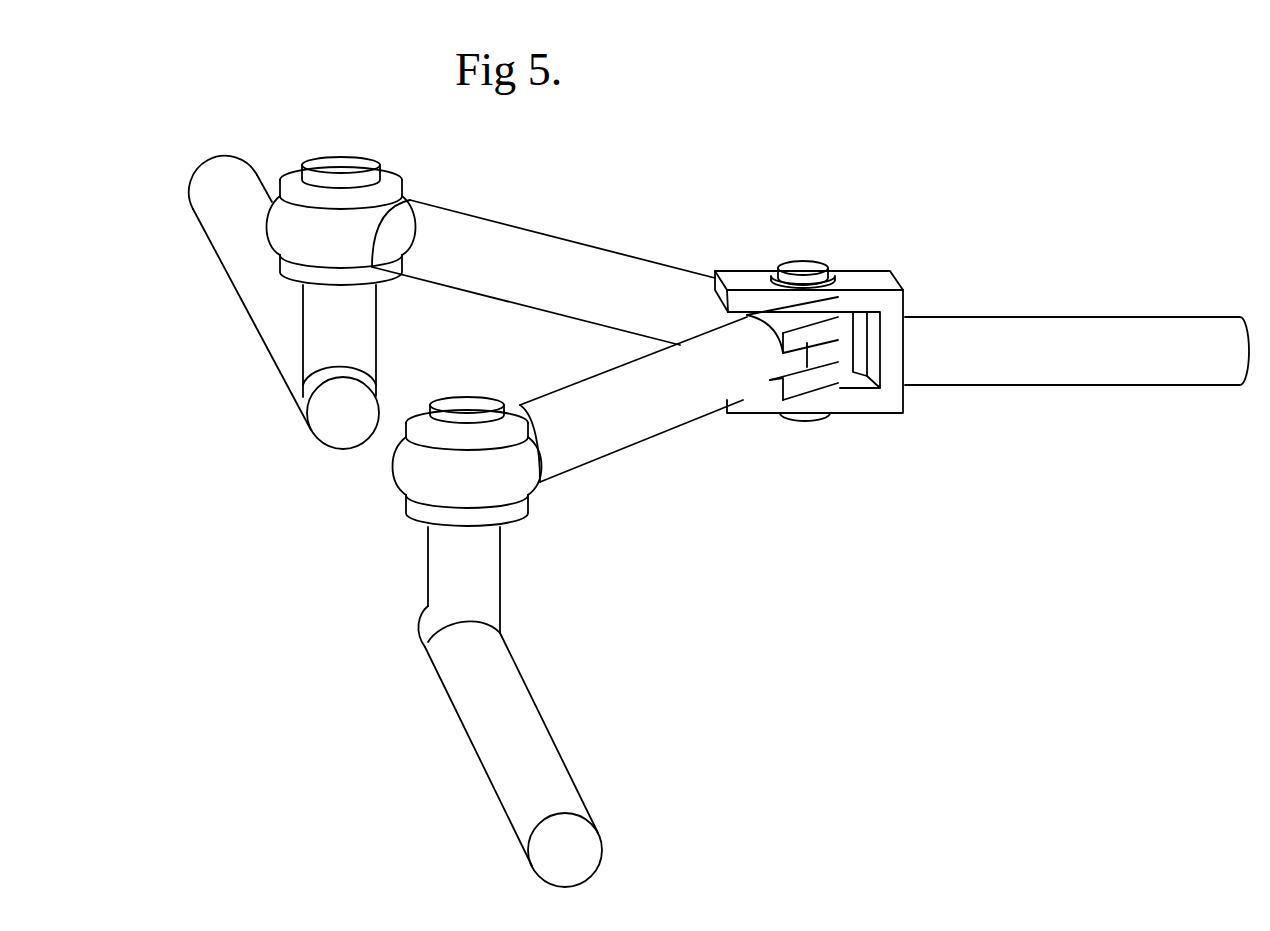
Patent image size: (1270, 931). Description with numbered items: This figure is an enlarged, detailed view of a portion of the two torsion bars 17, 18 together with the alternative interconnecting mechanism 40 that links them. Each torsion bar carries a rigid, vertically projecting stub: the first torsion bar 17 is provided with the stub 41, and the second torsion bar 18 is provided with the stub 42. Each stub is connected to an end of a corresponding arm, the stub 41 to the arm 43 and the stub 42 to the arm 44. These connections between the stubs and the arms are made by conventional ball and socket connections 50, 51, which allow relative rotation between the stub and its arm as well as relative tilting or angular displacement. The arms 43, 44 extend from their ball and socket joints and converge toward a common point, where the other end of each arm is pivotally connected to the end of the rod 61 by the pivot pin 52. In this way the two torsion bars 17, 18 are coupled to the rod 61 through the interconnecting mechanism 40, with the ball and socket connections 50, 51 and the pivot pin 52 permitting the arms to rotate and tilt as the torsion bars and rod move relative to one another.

The torsion bar 17 is at (470, 740).
The torsion bar 18 is at (233, 287).
The interconnecting mechanism 40 is at (867, 230).
The stub 41 is at (428, 547).
The stub 42 is at (302, 335).
The arm 43 is at (673, 430).
The arm 44 is at (573, 242).
The ball and socket connection 50 is at (508, 477).
The ball and socket connection 51 is at (280, 203).
The pivot pin 52 is at (810, 260).
The rod 61 is at (1015, 313).